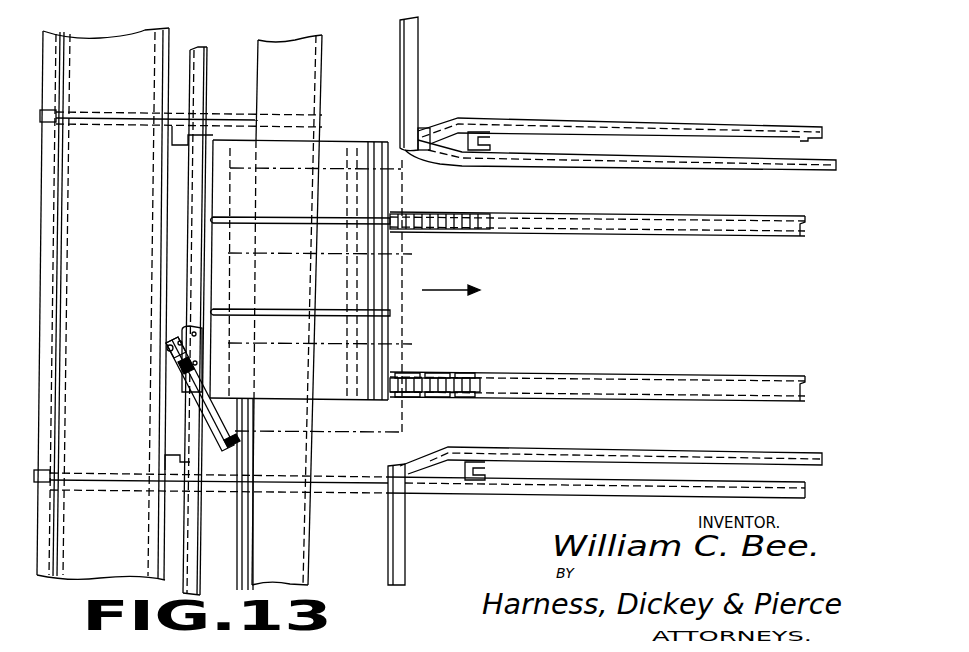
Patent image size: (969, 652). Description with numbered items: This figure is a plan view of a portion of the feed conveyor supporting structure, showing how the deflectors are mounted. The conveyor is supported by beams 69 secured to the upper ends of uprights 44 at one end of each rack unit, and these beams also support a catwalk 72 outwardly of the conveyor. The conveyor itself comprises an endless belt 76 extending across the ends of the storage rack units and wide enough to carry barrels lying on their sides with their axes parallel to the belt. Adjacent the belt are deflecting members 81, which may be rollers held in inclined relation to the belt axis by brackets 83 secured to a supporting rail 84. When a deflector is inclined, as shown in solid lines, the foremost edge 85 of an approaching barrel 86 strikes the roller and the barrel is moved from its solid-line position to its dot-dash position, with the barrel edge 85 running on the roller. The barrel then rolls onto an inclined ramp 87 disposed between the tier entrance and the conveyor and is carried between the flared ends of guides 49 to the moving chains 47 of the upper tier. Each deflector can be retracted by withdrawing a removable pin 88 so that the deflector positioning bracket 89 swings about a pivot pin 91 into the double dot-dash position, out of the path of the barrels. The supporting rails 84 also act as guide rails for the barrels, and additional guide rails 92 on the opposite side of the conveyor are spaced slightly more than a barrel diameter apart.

The catwalk 72 is at (132, 86).
The endless belt 76 is at (305, 79).
The supporting rail 84 is at (192, 268).
The foremost edge of barrel 85 is at (278, 402).
The barrel 86 is at (383, 127).
The bracket 83 is at (180, 330).
The pivot pin 91 is at (167, 347).
The deflector positioning bracket 89 is at (178, 360).
The removable pin 88 is at (182, 370).
The deflecting member 81 is at (203, 420).
The moving chains 47 is at (468, 215).
The inclined ramp 87 is at (400, 363).
The guide rail 92 is at (408, 69).
The upright 44 is at (797, 148).
The guides 49 is at (674, 167).
The beam 69 is at (524, 494).